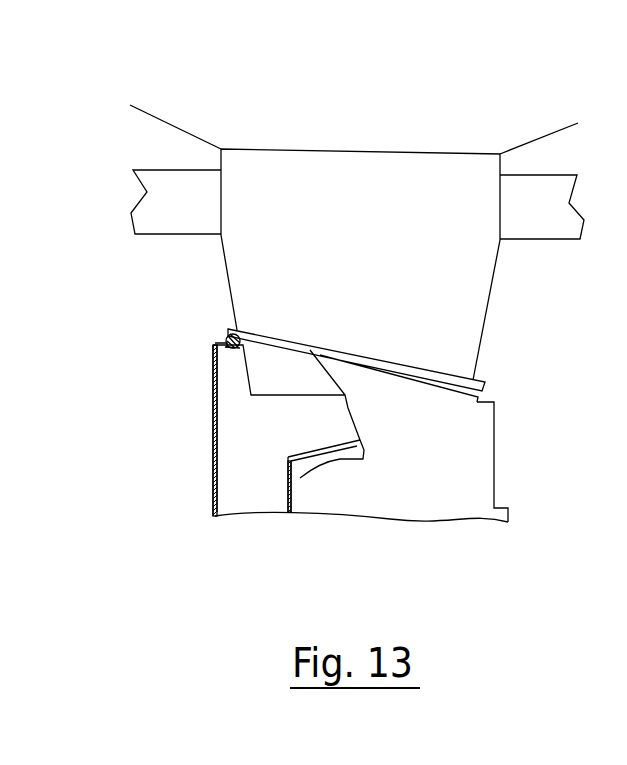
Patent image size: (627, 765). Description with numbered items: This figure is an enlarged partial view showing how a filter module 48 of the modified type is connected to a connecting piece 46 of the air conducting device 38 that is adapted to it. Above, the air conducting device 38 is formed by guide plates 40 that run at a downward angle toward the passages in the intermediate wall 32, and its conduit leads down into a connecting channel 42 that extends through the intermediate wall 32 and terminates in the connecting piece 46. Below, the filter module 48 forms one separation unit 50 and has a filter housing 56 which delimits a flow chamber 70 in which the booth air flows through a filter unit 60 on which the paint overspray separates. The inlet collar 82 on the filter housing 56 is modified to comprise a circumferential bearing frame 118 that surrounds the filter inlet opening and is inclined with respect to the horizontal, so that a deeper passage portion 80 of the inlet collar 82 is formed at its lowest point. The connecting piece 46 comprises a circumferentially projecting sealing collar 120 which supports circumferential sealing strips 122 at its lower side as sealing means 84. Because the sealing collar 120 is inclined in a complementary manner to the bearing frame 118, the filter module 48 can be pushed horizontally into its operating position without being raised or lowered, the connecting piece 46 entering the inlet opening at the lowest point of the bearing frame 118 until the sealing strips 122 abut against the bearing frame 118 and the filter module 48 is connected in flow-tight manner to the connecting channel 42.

The guide plates 40 is at (197, 137).
The air conducting device 38 is at (512, 163).
The intermediate wall 32 is at (533, 223).
The connecting piece 46 is at (225, 263).
The connecting channel 42 is at (438, 292).
The inlet collar 82 is at (386, 369).
The sealing collar 120 is at (480, 378).
The deeper passage portion 80 is at (490, 392).
The sealing means 84 is at (473, 400).
The sealing strips 122 is at (228, 331).
The bearing frame 118 is at (209, 341).
The filter housing 56 is at (213, 429).
The separation unit 50 is at (213, 467).
The filter module 48 is at (217, 500).
The flow chamber 70 is at (262, 483).
The filter unit 60 is at (308, 462).